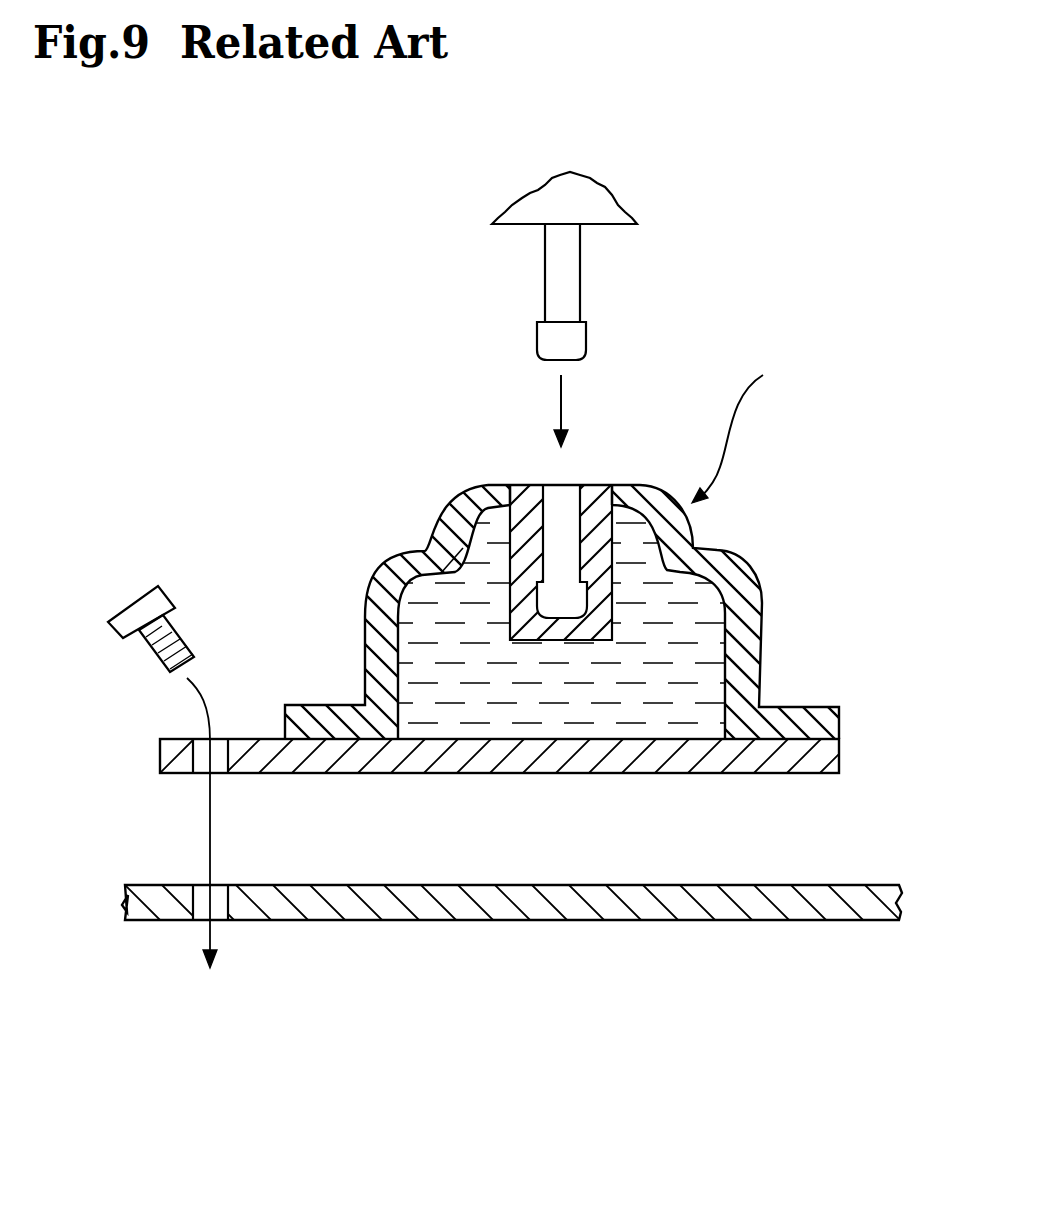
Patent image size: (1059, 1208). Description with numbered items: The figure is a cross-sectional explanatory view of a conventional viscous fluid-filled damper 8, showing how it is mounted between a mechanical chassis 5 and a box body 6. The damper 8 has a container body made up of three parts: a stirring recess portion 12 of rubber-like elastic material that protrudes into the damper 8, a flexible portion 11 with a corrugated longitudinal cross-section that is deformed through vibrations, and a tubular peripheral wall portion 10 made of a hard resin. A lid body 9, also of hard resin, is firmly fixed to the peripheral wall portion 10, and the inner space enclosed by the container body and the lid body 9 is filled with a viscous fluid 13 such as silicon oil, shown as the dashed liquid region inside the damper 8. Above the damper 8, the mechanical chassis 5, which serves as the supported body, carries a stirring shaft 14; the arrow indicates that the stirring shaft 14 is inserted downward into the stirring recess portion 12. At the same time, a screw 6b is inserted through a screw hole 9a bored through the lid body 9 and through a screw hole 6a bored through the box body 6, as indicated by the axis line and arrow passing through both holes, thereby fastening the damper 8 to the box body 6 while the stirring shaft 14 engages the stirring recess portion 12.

The mechanical chassis 5 is at (628, 208).
The stirring shaft 14 is at (580, 285).
The viscous fluid-filled damper 8 is at (545, 546).
The flexible portion 11 is at (372, 562).
The stirring recess portion 12 is at (680, 580).
The peripheral wall portion 10 is at (759, 660).
The viscous fluid 13 is at (555, 663).
The lid body 9 is at (462, 773).
The screw hole 9a is at (198, 765).
The box body 6 is at (802, 920).
The screw hole 6a is at (193, 905).
The screw 6b is at (133, 590).